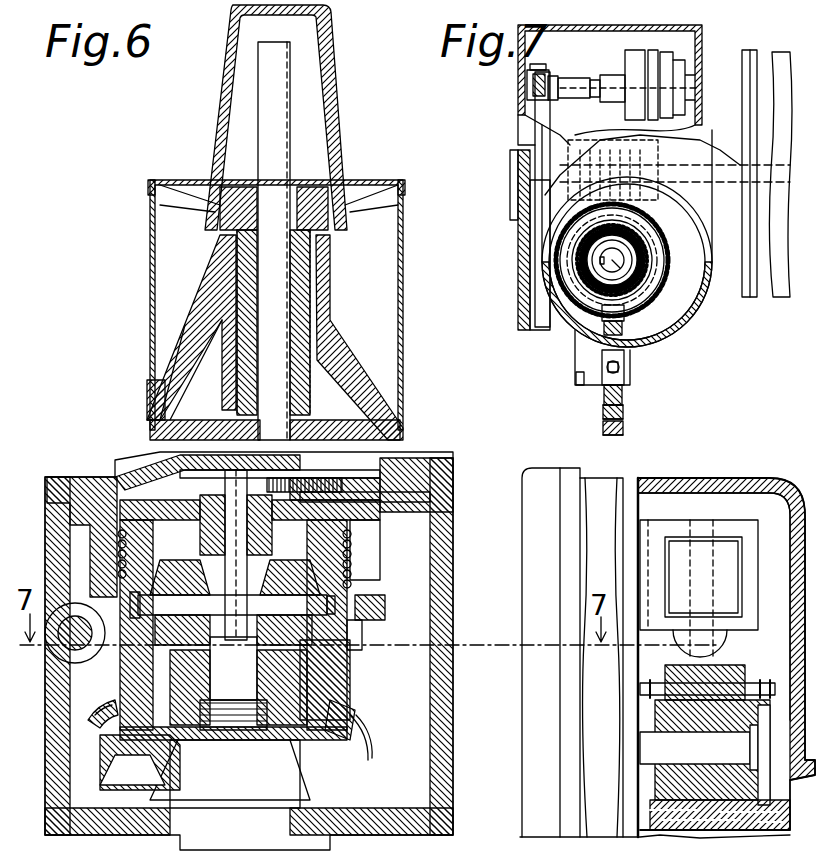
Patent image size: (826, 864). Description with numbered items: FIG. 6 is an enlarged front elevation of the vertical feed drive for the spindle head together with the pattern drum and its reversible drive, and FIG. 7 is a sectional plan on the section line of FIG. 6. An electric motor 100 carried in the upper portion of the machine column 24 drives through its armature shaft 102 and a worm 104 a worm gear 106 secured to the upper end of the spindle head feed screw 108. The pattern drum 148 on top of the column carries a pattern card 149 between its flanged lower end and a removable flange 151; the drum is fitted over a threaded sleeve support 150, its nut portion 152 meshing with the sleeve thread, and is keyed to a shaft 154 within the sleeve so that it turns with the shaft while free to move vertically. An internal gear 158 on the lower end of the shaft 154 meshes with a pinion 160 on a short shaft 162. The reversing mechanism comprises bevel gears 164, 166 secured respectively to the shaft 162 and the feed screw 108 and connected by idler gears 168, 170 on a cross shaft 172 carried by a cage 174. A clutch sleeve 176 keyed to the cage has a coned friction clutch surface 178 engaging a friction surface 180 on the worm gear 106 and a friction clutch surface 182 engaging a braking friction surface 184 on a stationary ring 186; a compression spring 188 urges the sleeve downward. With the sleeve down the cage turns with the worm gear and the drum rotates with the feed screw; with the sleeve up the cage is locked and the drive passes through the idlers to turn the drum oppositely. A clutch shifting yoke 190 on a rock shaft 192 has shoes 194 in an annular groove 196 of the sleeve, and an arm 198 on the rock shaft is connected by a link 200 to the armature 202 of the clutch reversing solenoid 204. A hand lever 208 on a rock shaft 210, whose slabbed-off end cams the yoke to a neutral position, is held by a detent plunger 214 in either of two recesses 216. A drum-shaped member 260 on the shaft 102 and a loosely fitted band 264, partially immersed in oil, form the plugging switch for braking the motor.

In FIG. 6, the machine column 24 is at (445, 670).
In FIG. 7, the machine column 24 is at (690, 290).
In FIG. 6, the electric motor 100 is at (605, 490).
In FIG. 7, the electric motor 100 is at (775, 210).
In FIG. 6, the shaft 102 is at (500, 775).
In FIG. 7, the shaft 102 is at (788, 165).
In FIG. 7, the worm 104 is at (690, 133).
In FIG. 6, the worm gear 106 is at (100, 760).
In FIG. 7, the worm gear 106 is at (650, 320).
In FIG. 6, the spindle head feed screw 108 is at (238, 700).
In FIG. 7, the spindle head feed screw 108 is at (665, 285).
In FIG. 6, the pattern drum 148 is at (225, 296).
In FIG. 6, the pattern card 149 is at (150, 245).
In FIG. 6, the sleeve support 150 is at (312, 275).
In FIG. 6, the removable flange 151 is at (155, 180).
In FIG. 6, the nut portion 152 is at (240, 393).
In FIG. 6, the shaft 154 is at (265, 87).
In FIG. 6, the internal gear 158 is at (328, 470).
In FIG. 6, the pinion 160 is at (150, 450).
In FIG. 6, the short shaft 162 is at (140, 465).
In FIG. 6, the bevel gear 164 is at (100, 500).
In FIG. 6, the bevel gear 166 is at (188, 640).
In FIG. 7, the bevel gear 166 is at (660, 300).
In FIG. 6, the idler gear 168 is at (188, 577).
In FIG. 6, the idler gear 170 is at (281, 577).
In FIG. 6, the cross shaft 172 is at (300, 605).
In FIG. 6, the cage 174 is at (395, 456).
In FIG. 7, the cage 174 is at (575, 242).
In FIG. 6, the clutch sleeve 176 is at (355, 660).
In FIG. 7, the clutch sleeve 176 is at (570, 276).
In FIG. 6, the coned friction clutch surface 178 is at (345, 705).
In FIG. 6, the friction surface 180 is at (370, 740).
In FIG. 6, the friction clutch surface 182 is at (360, 612).
In FIG. 6, the braking friction surface 184 is at (360, 582).
In FIG. 6, the stationary ring 186 is at (380, 497).
In FIG. 6, the compression spring 188 is at (355, 547).
In FIG. 6, the clutch shifting yoke 190 is at (105, 650).
In FIG. 7, the clutch shifting yoke 190 is at (550, 188).
In FIG. 6, the rock shaft 192 is at (98, 704).
In FIG. 7, the rock shaft 192 is at (537, 135).
In FIG. 7, the shoes 194 is at (655, 205).
In FIG. 6, the annular groove 196 is at (362, 630).
In FIG. 7, the arm 198 is at (527, 88).
In FIG. 7, the link 200 is at (578, 88).
In FIG. 7, the armature 202 is at (680, 86).
In FIG. 7, the clutch reversing solenoid 204 is at (660, 55).
In FIG. 7, the hand lever 208 is at (625, 398).
In FIG. 7, the rock shaft 210 is at (630, 365).
In FIG. 7, the detent plunger 214 is at (600, 392).
In FIG. 7, the recesses 216 is at (576, 380).
In FIG. 6, the drum-shaped member 260 is at (705, 752).
In FIG. 6, the band 264 is at (770, 700).